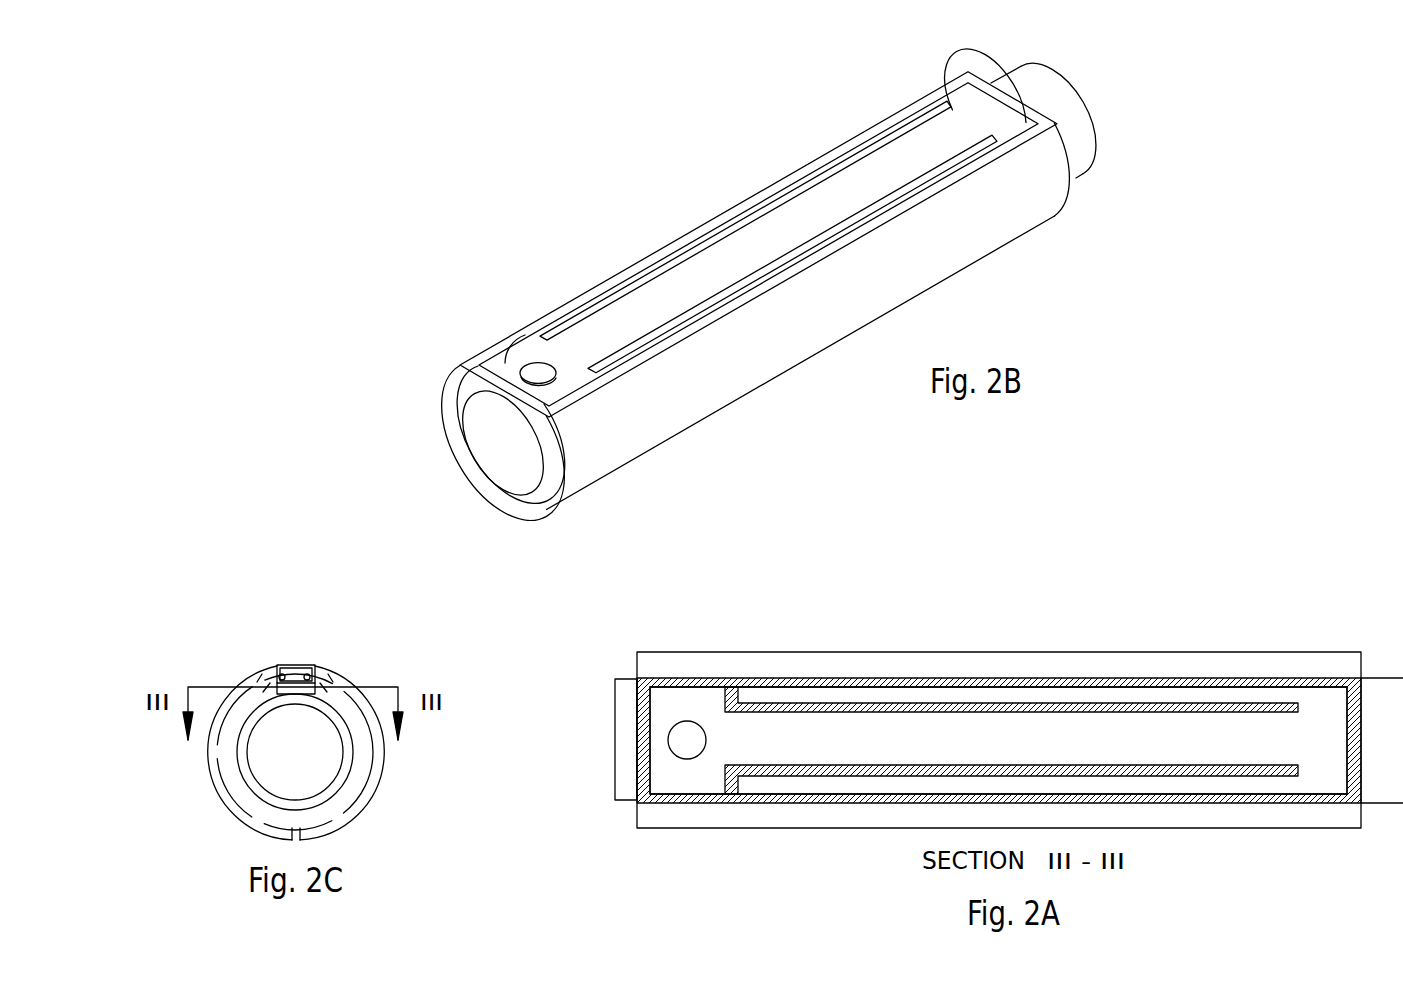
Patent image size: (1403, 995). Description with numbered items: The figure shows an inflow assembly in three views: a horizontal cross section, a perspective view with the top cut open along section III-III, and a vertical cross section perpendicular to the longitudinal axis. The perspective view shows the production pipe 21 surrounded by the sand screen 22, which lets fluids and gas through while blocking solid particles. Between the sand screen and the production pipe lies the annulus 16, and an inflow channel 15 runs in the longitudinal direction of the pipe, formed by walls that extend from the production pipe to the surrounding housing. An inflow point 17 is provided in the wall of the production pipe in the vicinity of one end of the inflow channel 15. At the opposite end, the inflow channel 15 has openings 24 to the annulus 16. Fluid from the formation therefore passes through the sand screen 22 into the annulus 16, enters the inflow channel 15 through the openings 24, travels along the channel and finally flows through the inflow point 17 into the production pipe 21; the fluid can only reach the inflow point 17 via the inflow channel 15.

In FIG. 2B, the inflow channel 15 is at (835, 200).
In FIG. 2A, the inflow channel 15 is at (877, 740).
In FIG. 2B, the annulus 16 is at (805, 255).
In FIG. 2A, the annulus 16 is at (848, 782).
In FIG. 2B, the inflow point 17 is at (543, 380).
In FIG. 2A, the inflow point 17 is at (687, 740).
In FIG. 2B, the production pipe 21 is at (527, 499).
In FIG. 2B, the sand screen 22 is at (775, 398).
In FIG. 2B, the openings 24 is at (962, 102).
In FIG. 2A, the openings 24 is at (1322, 768).